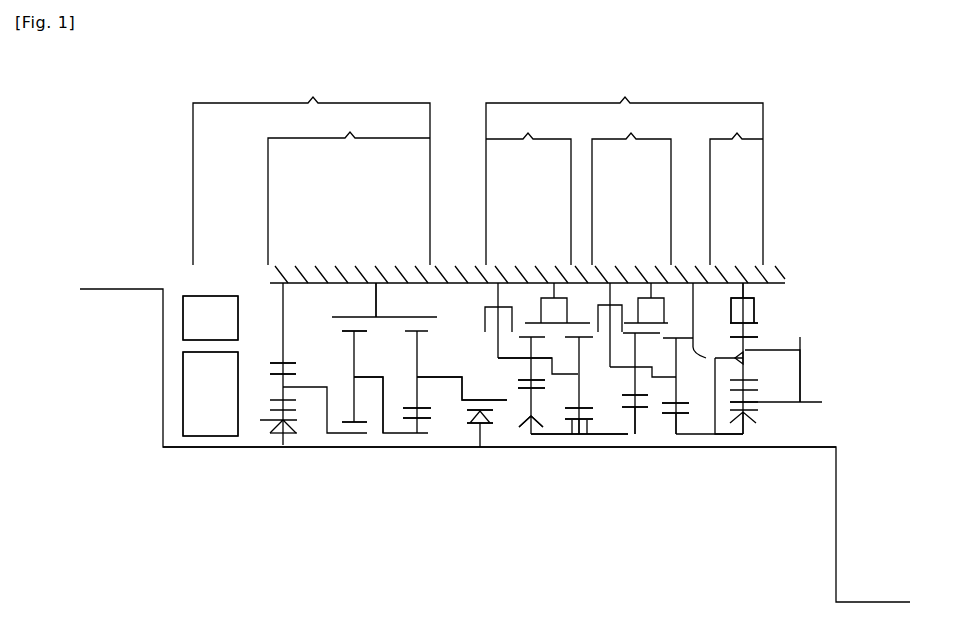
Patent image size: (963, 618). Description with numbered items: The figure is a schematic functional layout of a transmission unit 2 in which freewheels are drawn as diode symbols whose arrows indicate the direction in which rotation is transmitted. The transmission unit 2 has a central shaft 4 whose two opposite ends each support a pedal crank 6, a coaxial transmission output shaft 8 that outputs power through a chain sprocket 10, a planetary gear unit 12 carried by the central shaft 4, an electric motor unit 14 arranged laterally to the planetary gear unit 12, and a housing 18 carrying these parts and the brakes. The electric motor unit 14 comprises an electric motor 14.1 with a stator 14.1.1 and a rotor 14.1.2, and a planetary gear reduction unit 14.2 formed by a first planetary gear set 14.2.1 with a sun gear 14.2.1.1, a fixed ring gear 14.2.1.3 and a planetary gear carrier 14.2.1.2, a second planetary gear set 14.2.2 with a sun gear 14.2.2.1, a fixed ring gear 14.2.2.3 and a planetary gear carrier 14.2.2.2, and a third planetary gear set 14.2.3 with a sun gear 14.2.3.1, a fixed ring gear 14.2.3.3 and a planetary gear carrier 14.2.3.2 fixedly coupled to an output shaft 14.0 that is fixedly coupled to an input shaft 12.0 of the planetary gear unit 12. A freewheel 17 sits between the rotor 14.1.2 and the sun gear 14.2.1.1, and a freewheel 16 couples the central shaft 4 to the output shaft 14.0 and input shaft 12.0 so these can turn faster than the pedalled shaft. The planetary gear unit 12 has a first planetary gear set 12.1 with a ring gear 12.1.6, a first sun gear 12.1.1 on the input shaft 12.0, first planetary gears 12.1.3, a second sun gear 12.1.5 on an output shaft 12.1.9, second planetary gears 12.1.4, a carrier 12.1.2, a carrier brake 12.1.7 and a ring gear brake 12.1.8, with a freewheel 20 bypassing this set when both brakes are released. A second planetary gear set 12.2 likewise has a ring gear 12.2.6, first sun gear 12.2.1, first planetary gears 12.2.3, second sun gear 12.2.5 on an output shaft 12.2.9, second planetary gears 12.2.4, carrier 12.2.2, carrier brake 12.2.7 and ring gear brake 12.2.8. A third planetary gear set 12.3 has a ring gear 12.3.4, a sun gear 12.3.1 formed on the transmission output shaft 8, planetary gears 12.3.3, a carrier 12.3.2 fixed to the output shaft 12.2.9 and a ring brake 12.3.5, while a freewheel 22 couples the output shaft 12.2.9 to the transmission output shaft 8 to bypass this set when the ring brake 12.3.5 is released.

The transmission unit 2 is at (77, 241).
The central shaft 4 is at (178, 447).
The pedal crank 6 is at (163, 365).
The transmission output shaft 8 is at (805, 388).
The chain sprocket 10 is at (803, 366).
The planetary gear unit 12 is at (624, 171).
The input shaft of the planetary gear unit 12.0 is at (462, 410).
The first planetary gear set 12.1 is at (528, 189).
The first sun gear 12.1.1 is at (560, 432).
The carrier 12.1.2 is at (593, 432).
The first planetary gears 12.1.3 is at (531, 337).
The second planetary gears 12.1.4 is at (627, 432).
The second sun gear 12.1.5 is at (650, 432).
The ring gear 12.1.6 is at (594, 290).
The carrier brake 12.1.7 is at (492, 272).
The ring gear brake 12.1.8 is at (582, 288).
The output shaft of the double planetary gear set 12.1.9 is at (670, 432).
The second planetary gear set 12.2 is at (631, 189).
The first sun gear 12.2.1 is at (698, 432).
The carrier 12.2.2 is at (712, 432).
The first planetary gears 12.2.3 is at (660, 283).
The second planetary gears 12.2.4 is at (693, 300).
The second sun gear 12.2.5 is at (722, 432).
The ring gear 12.2.6 is at (657, 285).
The carrier brake 12.2.7 is at (572, 283).
The ring gear brake 12.2.8 is at (660, 283).
The output shaft of the additional double planetary gear set 12.2.9 is at (745, 432).
The third planetary gear set 12.3 is at (736, 189).
The sun gear 12.3.1 is at (757, 402).
The carrier 12.3.2 is at (740, 283).
The planetary gears 12.3.3 is at (800, 339).
The ring gear 12.3.4 is at (755, 332).
The ring brake 12.3.5 is at (757, 312).
The electric motor unit 14 is at (311, 171).
The output shaft of the electric motor unit 14.0 is at (466, 283).
The electric motor 14.1 is at (169, 283).
The stator 14.1.1 is at (210, 297).
The rotor 14.1.2 is at (214, 436).
The planetary gear reduction unit 14.2 is at (349, 189).
The first planetary gear set 14.2.1 is at (278, 463).
The sun gear 14.2.1.1 is at (267, 420).
The planetary gear carrier 14.2.1.2 is at (298, 393).
The fixed ring gear 14.2.1.3 is at (270, 363).
The second planetary gear set 14.2.2 is at (413, 483).
The sun gear 14.2.2.1 is at (359, 462).
The planetary gear carrier 14.2.2.2 is at (425, 460).
The fixed ring gear 14.2.2.3 is at (345, 285).
The third planetary gear set 14.2.3 is at (432, 400).
The sun gear 14.2.3.1 is at (512, 407).
The planetary gear carrier 14.2.3.2 is at (418, 283).
The fixed ring gear 14.2.3.3 is at (377, 285).
The freewheel 16 is at (462, 389).
The freewheel 17 is at (279, 446).
The housing 18 is at (770, 283).
The freewheel 20 is at (518, 408).
The freewheel 22 is at (745, 434).